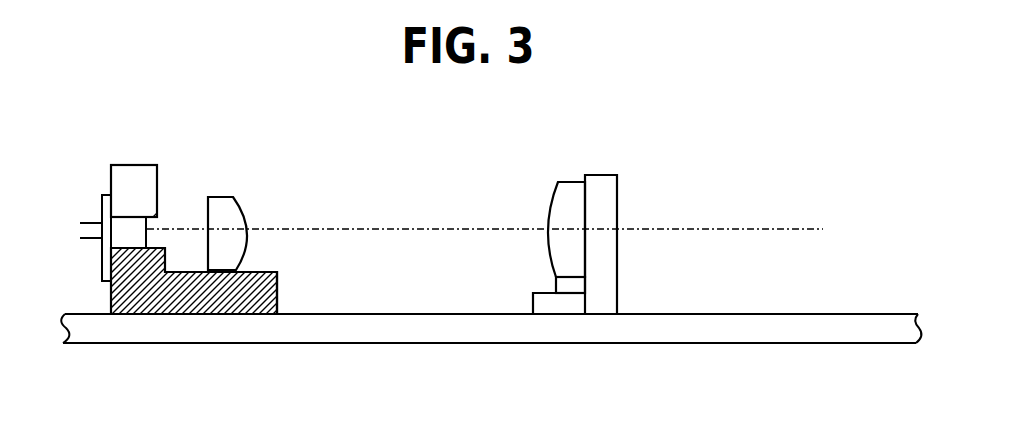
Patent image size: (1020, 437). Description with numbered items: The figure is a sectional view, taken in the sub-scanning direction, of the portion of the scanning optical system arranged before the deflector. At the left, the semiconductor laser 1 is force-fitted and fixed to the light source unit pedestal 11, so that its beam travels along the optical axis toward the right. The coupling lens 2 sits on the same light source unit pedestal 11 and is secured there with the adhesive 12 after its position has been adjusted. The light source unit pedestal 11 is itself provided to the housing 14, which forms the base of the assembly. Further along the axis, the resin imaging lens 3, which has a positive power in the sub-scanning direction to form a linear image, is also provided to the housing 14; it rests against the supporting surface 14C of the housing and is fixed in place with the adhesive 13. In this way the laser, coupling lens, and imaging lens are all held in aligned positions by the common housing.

The semiconductor laser 1 is at (103, 203).
The coupling lens 2 is at (224, 197).
The resin imaging lens 3 is at (568, 182).
The light source unit pedestal 11 is at (208, 315).
The adhesive 12 is at (243, 271).
The adhesive 13 is at (554, 290).
The housing 14 is at (747, 329).
The supporting surface 14C is at (570, 295).